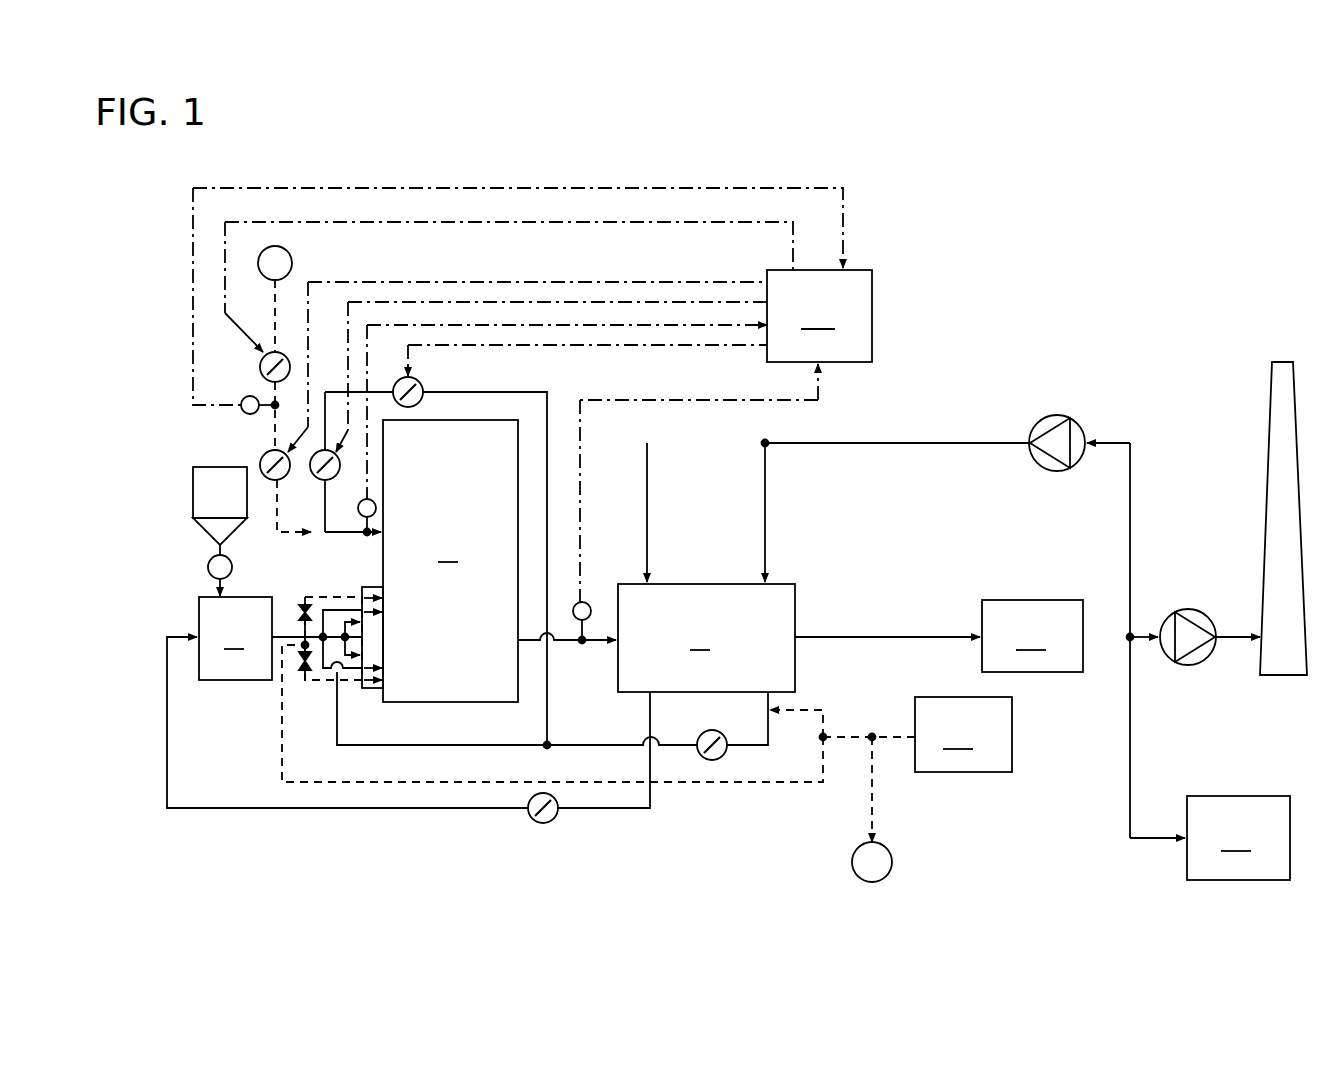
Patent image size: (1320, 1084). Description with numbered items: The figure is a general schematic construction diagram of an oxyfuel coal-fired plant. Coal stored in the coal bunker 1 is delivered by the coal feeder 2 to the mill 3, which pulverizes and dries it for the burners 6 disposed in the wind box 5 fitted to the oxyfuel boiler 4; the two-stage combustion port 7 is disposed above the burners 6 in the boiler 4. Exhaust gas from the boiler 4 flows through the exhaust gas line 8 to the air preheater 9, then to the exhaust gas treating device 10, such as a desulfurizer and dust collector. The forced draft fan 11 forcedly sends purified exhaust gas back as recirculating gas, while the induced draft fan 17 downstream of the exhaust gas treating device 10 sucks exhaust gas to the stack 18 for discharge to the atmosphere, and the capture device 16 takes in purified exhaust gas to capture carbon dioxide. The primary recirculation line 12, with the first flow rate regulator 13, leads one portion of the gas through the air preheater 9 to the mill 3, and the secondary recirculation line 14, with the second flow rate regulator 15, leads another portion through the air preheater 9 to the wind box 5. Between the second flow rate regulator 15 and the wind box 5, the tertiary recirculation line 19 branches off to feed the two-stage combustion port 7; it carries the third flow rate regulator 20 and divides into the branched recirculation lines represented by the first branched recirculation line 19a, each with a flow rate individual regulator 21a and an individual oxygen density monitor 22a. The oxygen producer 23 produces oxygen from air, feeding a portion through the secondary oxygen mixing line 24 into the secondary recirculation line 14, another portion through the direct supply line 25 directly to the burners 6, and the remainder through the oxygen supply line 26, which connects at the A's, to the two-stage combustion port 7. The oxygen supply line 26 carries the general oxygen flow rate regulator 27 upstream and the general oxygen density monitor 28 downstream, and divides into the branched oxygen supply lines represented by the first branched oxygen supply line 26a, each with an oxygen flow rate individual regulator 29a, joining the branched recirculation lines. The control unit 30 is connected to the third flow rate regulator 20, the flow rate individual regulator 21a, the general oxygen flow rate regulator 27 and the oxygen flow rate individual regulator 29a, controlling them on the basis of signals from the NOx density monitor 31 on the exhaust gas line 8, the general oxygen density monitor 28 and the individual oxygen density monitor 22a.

The coal bunker 1 is at (193, 495).
The coal feeder 2 is at (208, 567).
The mill 3 is at (235, 638).
The oxyfuel boiler 4 is at (450, 561).
The wind box 5 is at (375, 690).
The burners 6 is at (362, 662).
The two-stage combustion port 7 is at (372, 540).
The exhaust gas line 8 is at (572, 650).
The air preheater 9 is at (706, 638).
The exhaust gas treating device 10 is at (939, 636).
The forced draft fan 11 is at (1052, 415).
The primary recirculation line 12 is at (445, 810).
The first flow rate regulator 13 is at (546, 825).
The secondary recirculation line 14 is at (462, 747).
The second flow rate regulator 15 is at (700, 735).
The capture device 16 is at (1210, 838).
The induced draft fan 17 is at (1187, 608).
The stack 18 is at (1282, 360).
The tertiary recirculation line 19 is at (520, 392).
The first branched recirculation line 19a is at (322, 410).
The third flow rate regulator 20 is at (422, 384).
The flow rate individual regulator 21a is at (312, 484).
The individual oxygen density monitor 22a is at (360, 536).
The oxygen producer 23 is at (963, 734).
The secondary oxygen mixing line 24 is at (824, 712).
The direct supply line 25 is at (745, 785).
The oxygen supply line 26 is at (878, 808).
The first branched oxygen supply line 26a is at (268, 430).
The general oxygen flow rate regulator 27 is at (264, 350).
The general oxygen density monitor 28 is at (246, 397).
The oxygen flow rate individual regulator 29a is at (270, 483).
The control unit 30 is at (819, 316).
The NOx density monitor 31 is at (586, 600).